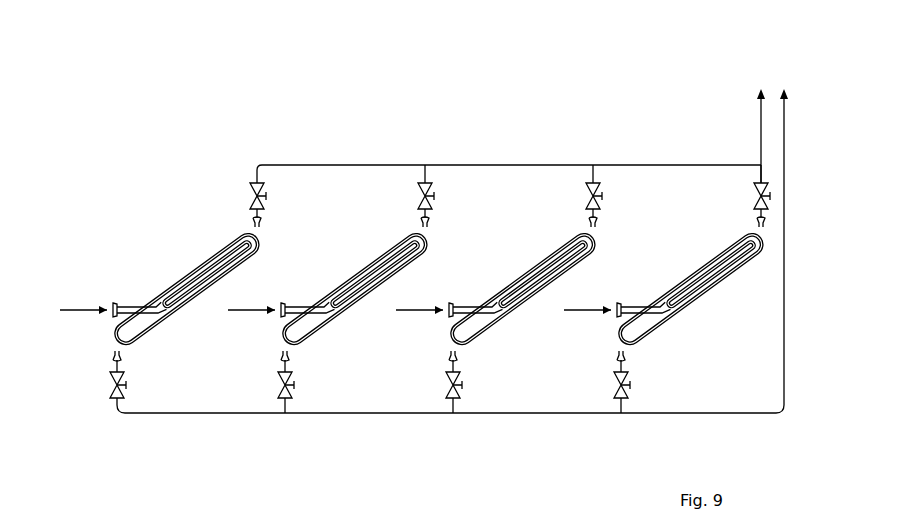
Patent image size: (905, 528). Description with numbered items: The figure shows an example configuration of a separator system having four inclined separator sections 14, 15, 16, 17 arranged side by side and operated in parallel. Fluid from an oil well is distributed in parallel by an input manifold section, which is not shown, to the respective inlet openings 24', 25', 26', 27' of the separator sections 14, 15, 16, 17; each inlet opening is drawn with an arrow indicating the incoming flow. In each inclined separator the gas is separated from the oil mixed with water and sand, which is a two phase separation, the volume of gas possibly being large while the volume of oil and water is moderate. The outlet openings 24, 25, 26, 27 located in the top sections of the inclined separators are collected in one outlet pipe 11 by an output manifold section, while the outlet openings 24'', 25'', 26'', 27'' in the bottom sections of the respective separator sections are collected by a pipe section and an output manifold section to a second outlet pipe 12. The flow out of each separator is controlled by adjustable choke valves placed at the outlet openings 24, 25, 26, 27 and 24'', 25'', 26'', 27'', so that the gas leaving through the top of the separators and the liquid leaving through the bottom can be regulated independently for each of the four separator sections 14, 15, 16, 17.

The outlet pipe 11 is at (757, 117).
The second outlet pipe 12 is at (787, 117).
The inclined separator section 14 is at (188, 278).
The inclined separator section 15 is at (355, 274).
The inclined separator section 16 is at (523, 276).
The inclined separator section 17 is at (691, 274).
The outlet opening 24 is at (223, 177).
The outlet opening 25 is at (387, 174).
The outlet opening 26 is at (555, 173).
The outlet opening 27 is at (722, 171).
The inlet opening 24' is at (113, 271).
The inlet opening 25' is at (281, 272).
The inlet opening 26' is at (451, 272).
The inlet opening 27' is at (617, 269).
The outlet opening 24'' is at (83, 392).
The outlet opening 25'' is at (240, 386).
The outlet opening 26'' is at (410, 386).
The outlet opening 27'' is at (577, 386).